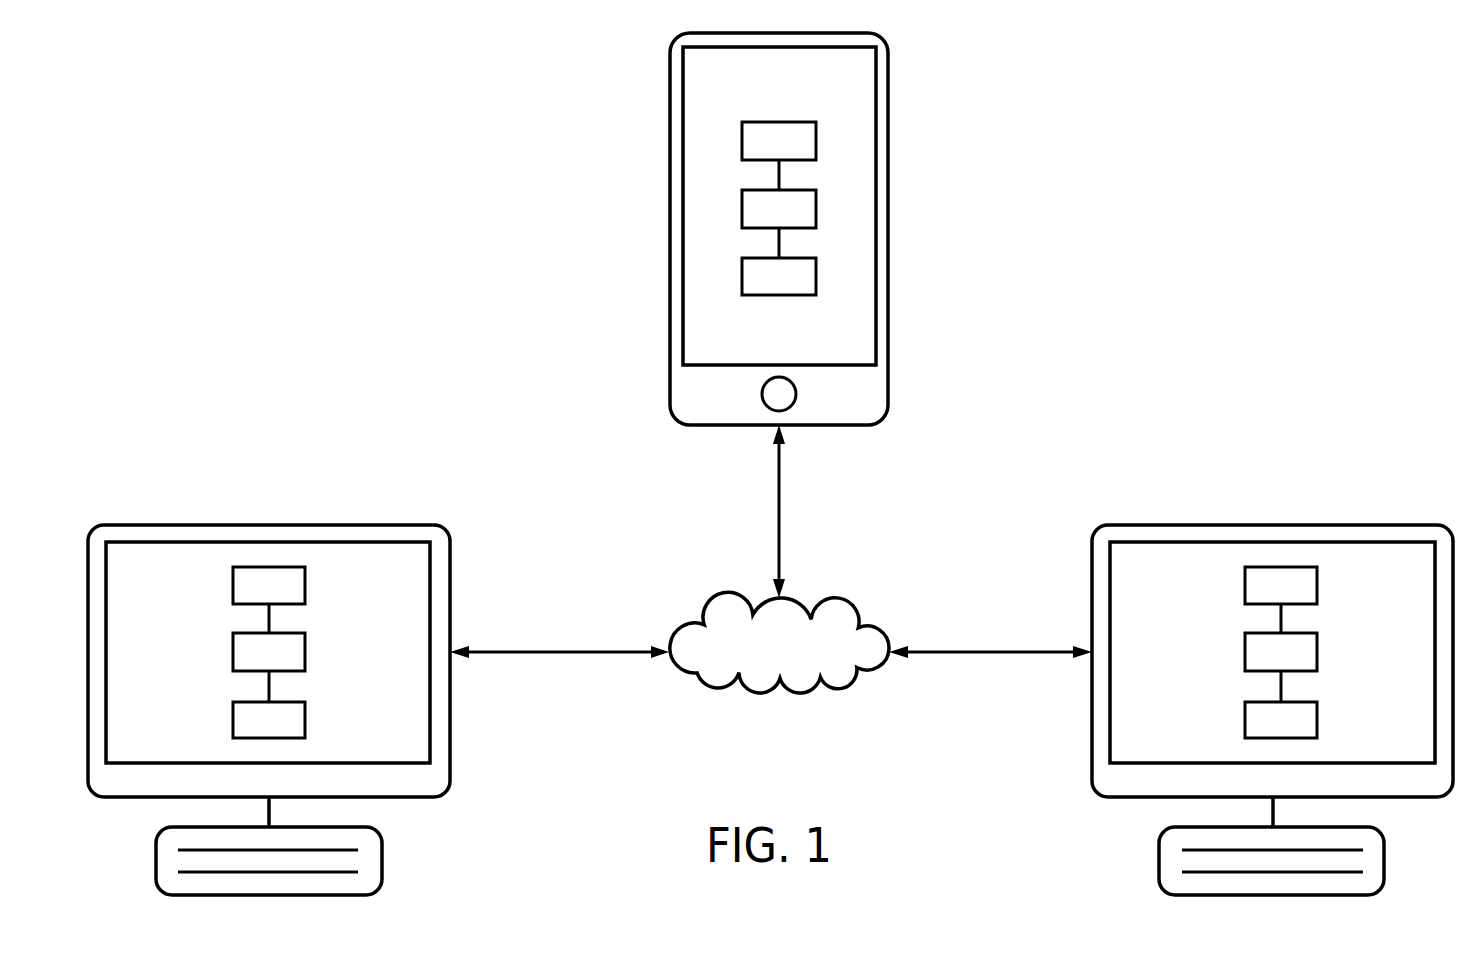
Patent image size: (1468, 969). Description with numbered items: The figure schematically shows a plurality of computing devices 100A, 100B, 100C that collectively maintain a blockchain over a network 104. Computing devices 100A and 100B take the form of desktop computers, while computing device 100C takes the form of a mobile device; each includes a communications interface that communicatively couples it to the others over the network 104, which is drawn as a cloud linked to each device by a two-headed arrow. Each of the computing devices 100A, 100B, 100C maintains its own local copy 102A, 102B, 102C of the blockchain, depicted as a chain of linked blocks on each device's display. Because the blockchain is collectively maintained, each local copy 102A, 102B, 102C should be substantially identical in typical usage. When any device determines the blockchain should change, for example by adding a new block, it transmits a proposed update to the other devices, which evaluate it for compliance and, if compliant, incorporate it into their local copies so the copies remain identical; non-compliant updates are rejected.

The computing device 100A is at (178, 525).
The computing device 100B is at (1128, 525).
The computing device 100C is at (685, 425).
The local copy of the blockchain 102A is at (198, 640).
The local copy of the blockchain 102B is at (1216, 644).
The local copy of the blockchain 102C is at (787, 88).
The network 104 is at (862, 657).